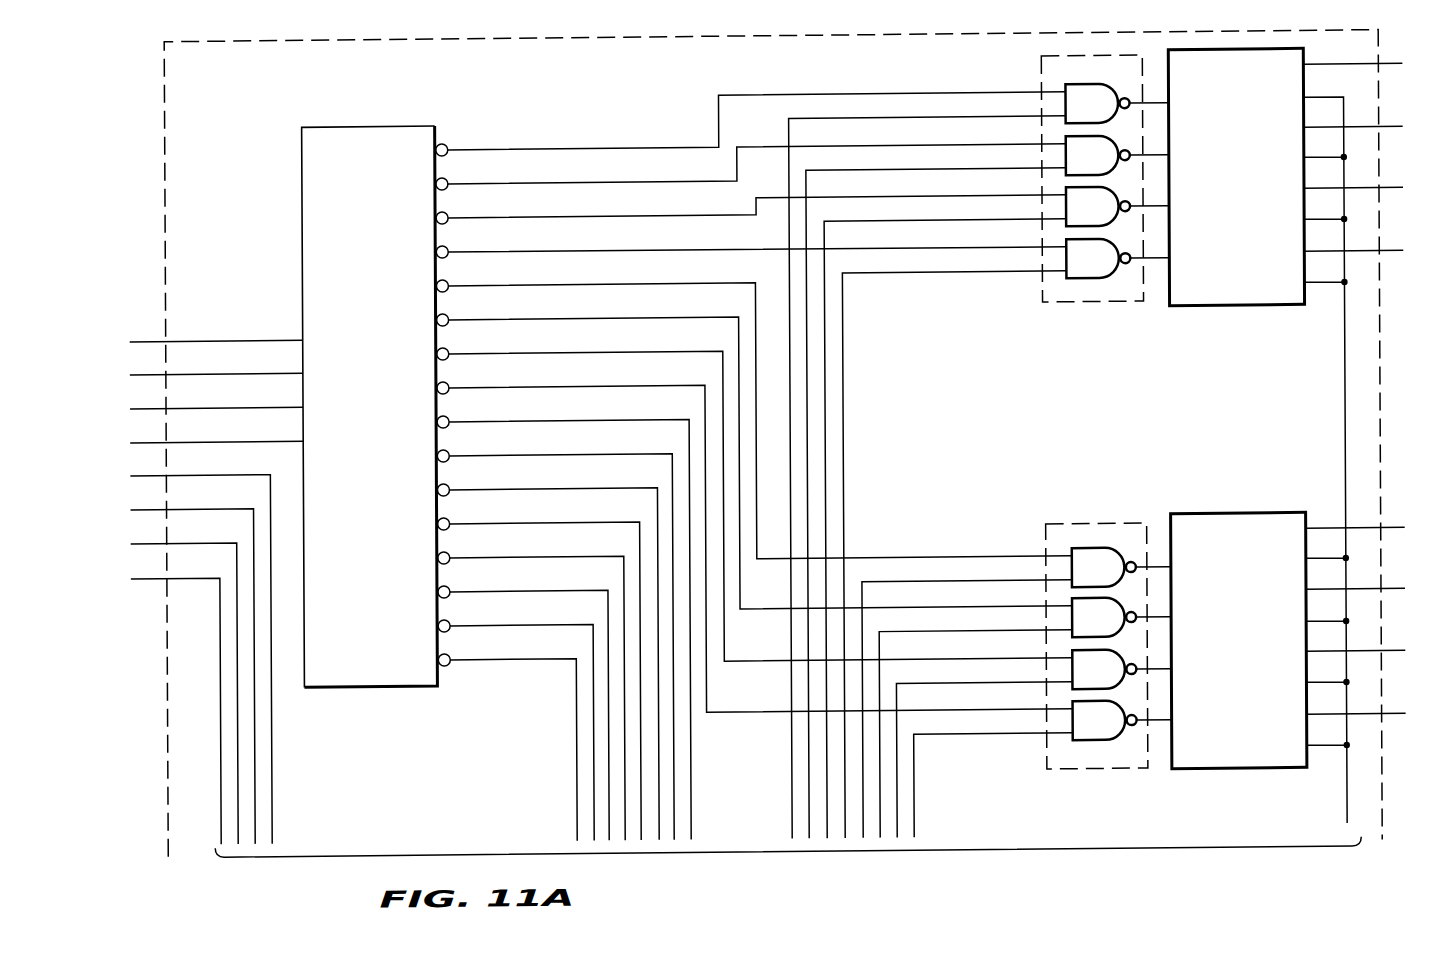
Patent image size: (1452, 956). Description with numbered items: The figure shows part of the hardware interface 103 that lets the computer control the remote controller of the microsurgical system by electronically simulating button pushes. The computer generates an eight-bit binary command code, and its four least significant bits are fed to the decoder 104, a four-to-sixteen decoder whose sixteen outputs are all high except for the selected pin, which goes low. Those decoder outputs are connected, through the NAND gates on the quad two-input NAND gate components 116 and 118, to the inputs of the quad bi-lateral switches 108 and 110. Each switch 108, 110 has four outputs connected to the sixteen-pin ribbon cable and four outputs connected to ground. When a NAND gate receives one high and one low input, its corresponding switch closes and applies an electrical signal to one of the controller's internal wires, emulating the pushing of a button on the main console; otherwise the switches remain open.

The hardware interface 103 is at (677, 118).
The decoder 104 is at (364, 687).
The quad bi-lateral switch 108 is at (1241, 313).
The quad bi-lateral switch 110 is at (1244, 776).
The quad 2-input NAND gate component 116 is at (1032, 310).
The quad 2-input NAND gate component 118 is at (1034, 784).